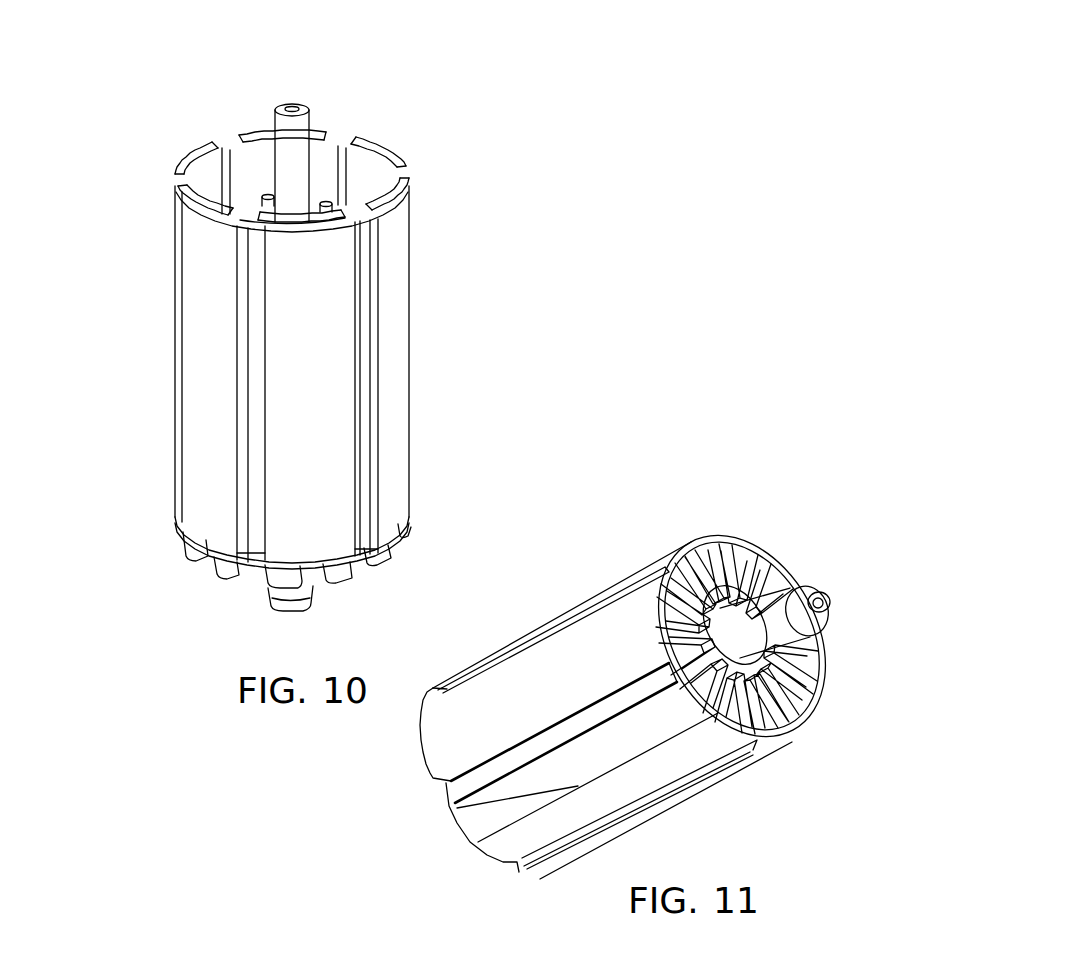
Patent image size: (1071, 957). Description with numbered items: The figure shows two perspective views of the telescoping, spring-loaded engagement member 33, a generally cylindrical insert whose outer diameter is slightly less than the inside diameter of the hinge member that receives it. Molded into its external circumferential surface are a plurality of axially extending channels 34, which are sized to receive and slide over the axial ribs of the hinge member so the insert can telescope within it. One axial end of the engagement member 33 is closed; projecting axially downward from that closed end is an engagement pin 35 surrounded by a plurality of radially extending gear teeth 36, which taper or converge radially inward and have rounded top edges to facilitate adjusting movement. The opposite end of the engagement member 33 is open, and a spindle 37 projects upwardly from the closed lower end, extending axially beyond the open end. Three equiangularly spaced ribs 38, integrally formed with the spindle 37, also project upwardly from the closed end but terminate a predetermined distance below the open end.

In FIG. 10, the engagement member 33 is at (424, 306).
In FIG. 11, the engagement member 33 is at (609, 574).
In FIG. 10, the axially extending channels 34 is at (183, 192).
In FIG. 11, the axially extending channels 34 is at (462, 785).
In FIG. 11, the engagement pin 35 is at (815, 623).
In FIG. 11, the gear teeth 36 is at (760, 563).
In FIG. 10, the spindle 37 is at (298, 138).
In FIG. 10, the ribs 38 is at (267, 203).